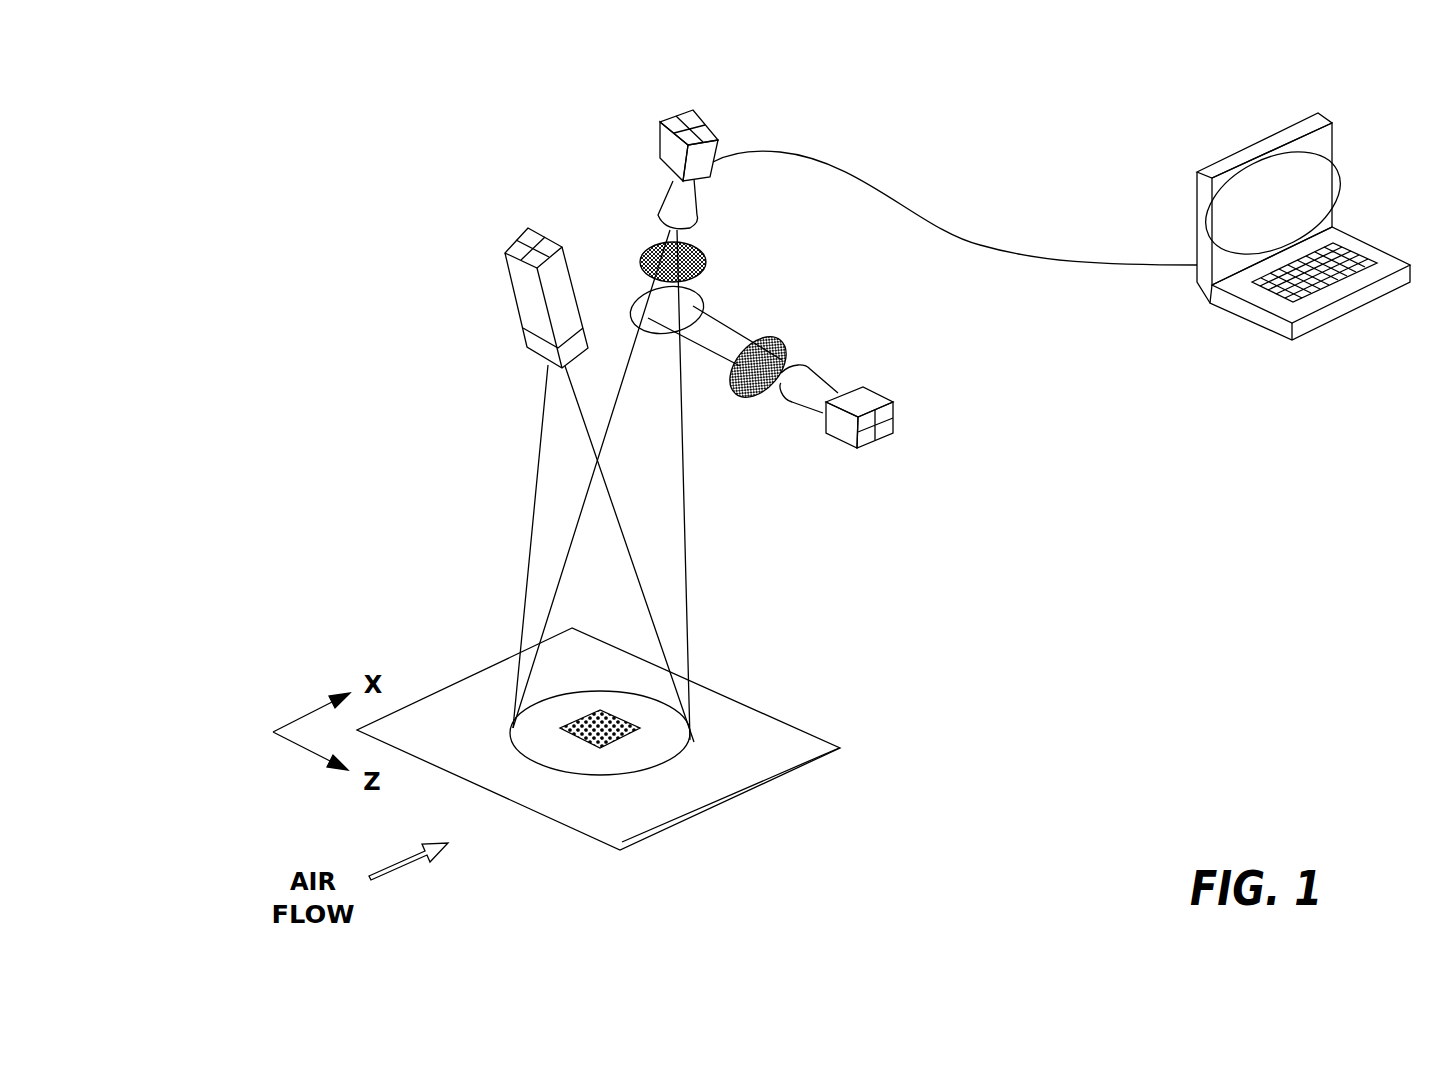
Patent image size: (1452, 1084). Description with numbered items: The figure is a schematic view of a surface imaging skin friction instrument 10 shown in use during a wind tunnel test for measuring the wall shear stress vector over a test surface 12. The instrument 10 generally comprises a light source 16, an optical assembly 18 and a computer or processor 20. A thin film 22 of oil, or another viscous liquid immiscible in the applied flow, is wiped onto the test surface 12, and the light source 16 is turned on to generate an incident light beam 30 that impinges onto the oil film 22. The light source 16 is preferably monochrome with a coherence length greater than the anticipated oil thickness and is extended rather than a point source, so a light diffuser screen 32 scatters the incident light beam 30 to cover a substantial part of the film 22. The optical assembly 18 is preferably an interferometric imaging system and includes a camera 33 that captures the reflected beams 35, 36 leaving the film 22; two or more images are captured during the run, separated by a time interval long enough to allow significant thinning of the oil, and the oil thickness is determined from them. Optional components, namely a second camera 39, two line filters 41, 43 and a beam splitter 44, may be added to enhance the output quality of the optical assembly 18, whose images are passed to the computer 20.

The surface imaging skin friction instrument 10 is at (918, 188).
The test surface 12 is at (733, 768).
The light source 16 is at (527, 287).
The optical assembly 18 is at (428, 177).
The computer or processor 20 is at (1272, 323).
The thin film of oil 22 is at (590, 732).
The incident light beam 30 is at (533, 497).
The light diffuser screen 32 is at (530, 353).
The camera 33 is at (675, 158).
The reflected beam 35 is at (664, 485).
The reflected beam 36 is at (753, 622).
The second camera 39 is at (870, 437).
The line filter 41 is at (680, 272).
The line filter 43 is at (743, 395).
The beam splitter 44 is at (690, 310).